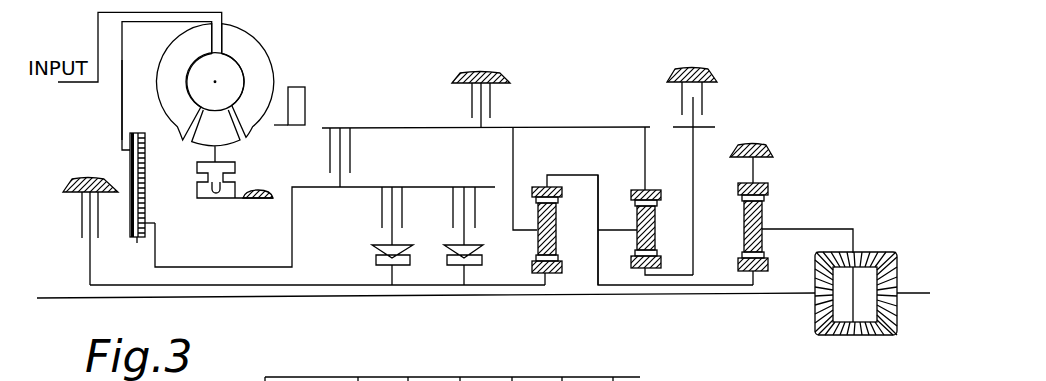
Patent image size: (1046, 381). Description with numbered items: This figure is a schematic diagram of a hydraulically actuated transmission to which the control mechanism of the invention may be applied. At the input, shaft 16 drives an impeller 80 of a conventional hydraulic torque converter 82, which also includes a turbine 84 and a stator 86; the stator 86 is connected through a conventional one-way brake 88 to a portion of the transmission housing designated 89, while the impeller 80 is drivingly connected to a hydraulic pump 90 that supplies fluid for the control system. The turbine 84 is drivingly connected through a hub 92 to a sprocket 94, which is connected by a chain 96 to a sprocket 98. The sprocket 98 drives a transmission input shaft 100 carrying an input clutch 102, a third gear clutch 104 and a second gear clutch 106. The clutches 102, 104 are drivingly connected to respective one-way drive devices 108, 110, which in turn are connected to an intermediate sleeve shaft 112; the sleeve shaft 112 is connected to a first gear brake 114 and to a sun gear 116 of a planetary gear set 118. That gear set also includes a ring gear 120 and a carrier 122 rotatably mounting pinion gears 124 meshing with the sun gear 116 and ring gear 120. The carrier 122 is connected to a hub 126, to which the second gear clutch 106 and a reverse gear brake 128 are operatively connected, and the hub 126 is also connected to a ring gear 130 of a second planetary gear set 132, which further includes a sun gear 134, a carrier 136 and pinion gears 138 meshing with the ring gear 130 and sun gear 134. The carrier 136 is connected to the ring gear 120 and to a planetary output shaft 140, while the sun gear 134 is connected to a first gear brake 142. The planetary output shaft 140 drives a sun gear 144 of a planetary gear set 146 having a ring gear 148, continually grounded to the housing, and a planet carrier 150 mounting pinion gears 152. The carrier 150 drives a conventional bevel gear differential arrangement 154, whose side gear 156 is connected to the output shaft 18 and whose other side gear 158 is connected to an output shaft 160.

The shaft 16 is at (97, 33).
The output shaft 18 is at (907, 295).
The impeller 80 is at (262, 70).
The hydraulic torque converter 82 is at (266, 43).
The turbine 84 is at (177, 65).
The stator 86 is at (235, 133).
The one-way brake 88 is at (233, 202).
The transmission housing portion 89 is at (253, 197).
The hydraulic pump 90 is at (307, 100).
The hub 92 is at (120, 117).
The sprocket 94 is at (127, 158).
The chain 96 is at (148, 197).
The sprocket 98 is at (127, 256).
The transmission input shaft 100 is at (192, 268).
The input clutch 102 is at (452, 197).
The third gear clutch 104 is at (372, 197).
The second gear clutch 106 is at (350, 160).
The one-way drive device 108 is at (473, 268).
The one-way drive device 110 is at (377, 258).
The intermediate sleeve shaft 112 is at (423, 286).
The first gear brake 114 is at (80, 220).
The sun gear 116 is at (553, 295).
The planetary gear set 118 is at (518, 170).
The ring gear 120 is at (538, 185).
The carrier 122 is at (530, 228).
The pinion gears 124 is at (560, 180).
The hub 126 is at (498, 128).
The reverse gear brake 128 is at (467, 107).
The ring gear 130 is at (650, 187).
The planetary gear set 132 is at (673, 252).
The sun gear 134 is at (640, 268).
The carrier 136 is at (613, 225).
The pinion gears 138 is at (657, 230).
The planetary output shaft 140 is at (597, 267).
The first gear brake 142 is at (703, 100).
The sun gear 144 is at (765, 275).
The planetary gear set 146 is at (778, 210).
The ring gear 148 is at (779, 178).
The planet carrier 150 is at (792, 228).
The pinion gears 152 is at (742, 247).
The bevel gear differential arrangement 154 is at (875, 241).
The differential side gear 156 is at (898, 270).
The side gear 158 is at (815, 305).
The output shaft 160 is at (358, 298).